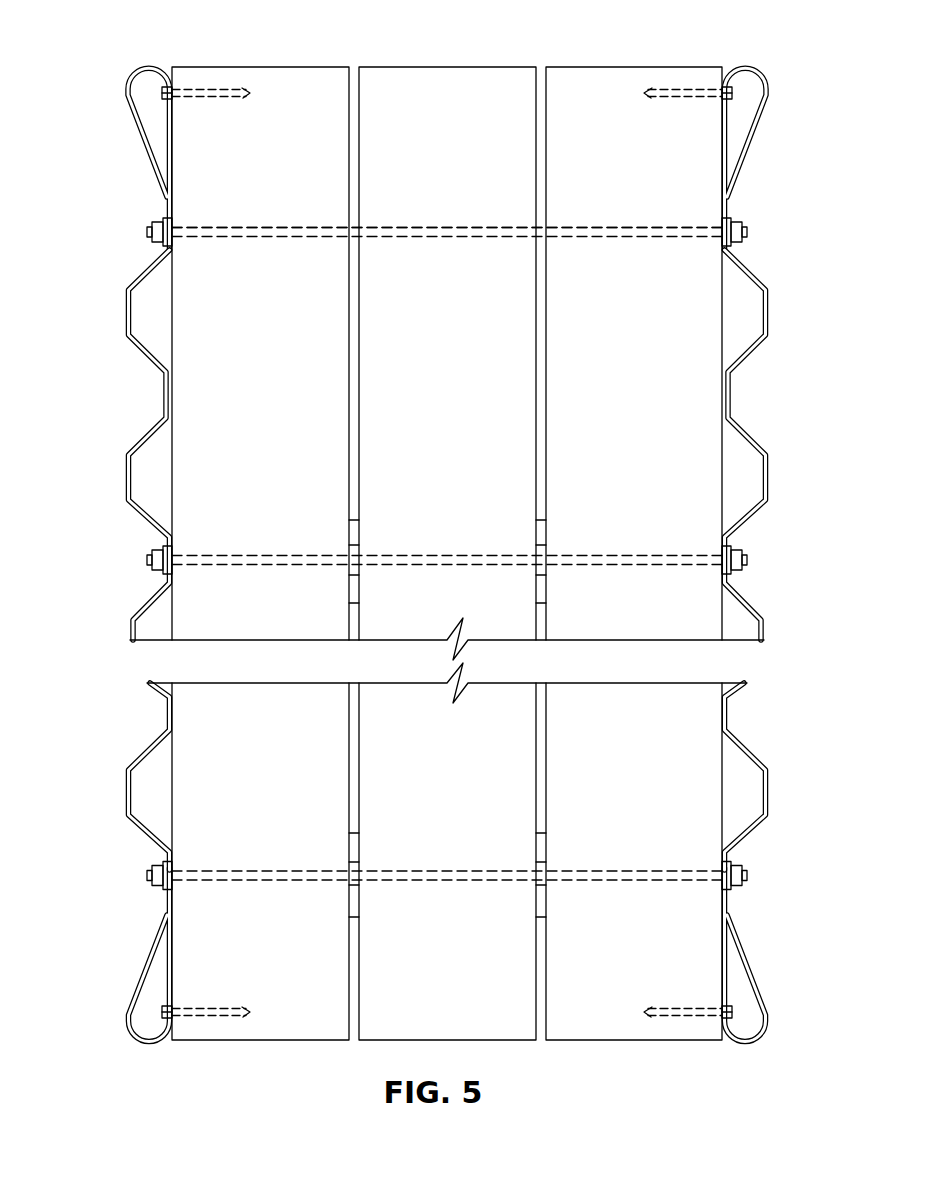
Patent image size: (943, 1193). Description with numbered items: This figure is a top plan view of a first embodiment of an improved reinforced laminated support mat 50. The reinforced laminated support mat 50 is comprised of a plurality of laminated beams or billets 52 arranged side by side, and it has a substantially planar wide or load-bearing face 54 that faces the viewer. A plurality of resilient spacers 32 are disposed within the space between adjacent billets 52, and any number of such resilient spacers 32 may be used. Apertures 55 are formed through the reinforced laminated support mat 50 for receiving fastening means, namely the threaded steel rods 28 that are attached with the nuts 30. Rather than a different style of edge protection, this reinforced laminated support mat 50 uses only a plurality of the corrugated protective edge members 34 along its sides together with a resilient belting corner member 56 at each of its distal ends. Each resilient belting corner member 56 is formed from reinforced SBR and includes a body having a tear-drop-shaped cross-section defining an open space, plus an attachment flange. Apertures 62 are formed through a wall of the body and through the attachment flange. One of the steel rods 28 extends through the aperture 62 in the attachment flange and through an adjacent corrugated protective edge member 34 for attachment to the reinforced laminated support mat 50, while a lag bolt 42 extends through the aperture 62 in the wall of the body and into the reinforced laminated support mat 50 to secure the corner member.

The reinforced laminated support mat 50 is at (103, 58).
The laminated beams or billets 52 is at (447, 530).
The load-bearing face 54 is at (437, 410).
The apertures 55 is at (452, 233).
The resilient belting corner member 56 is at (130, 115).
The corrugated protective edge members 34 is at (130, 355).
The resilient spacers 32 is at (353, 537).
The threaded steel rods 28 is at (748, 233).
The nuts 30 is at (735, 222).
The apertures 62 is at (720, 877).
The lag bolt 42 is at (210, 100).